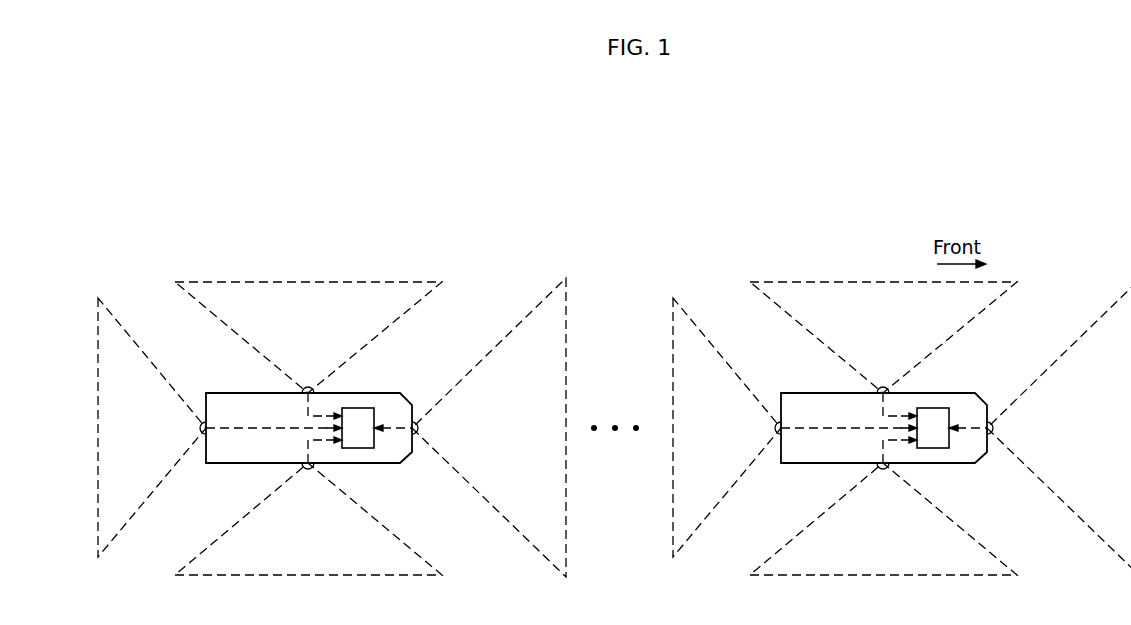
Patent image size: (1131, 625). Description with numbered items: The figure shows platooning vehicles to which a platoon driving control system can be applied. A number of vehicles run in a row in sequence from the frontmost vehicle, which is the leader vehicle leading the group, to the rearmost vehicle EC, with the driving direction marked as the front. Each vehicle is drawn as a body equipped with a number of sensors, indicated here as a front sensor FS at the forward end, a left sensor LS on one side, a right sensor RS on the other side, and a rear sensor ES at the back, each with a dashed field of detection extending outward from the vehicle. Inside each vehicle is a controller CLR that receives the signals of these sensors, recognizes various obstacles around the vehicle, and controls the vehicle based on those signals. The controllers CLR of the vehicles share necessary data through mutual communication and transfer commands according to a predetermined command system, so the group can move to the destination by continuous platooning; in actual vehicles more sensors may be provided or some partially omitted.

The rearmost vehicle EC is at (402, 387).
The left sensor LS is at (306, 389).
The right sensor RS is at (305, 468).
The rear sensor ES is at (205, 435).
The front sensor FS is at (414, 435).
The controller CLR is at (366, 446).